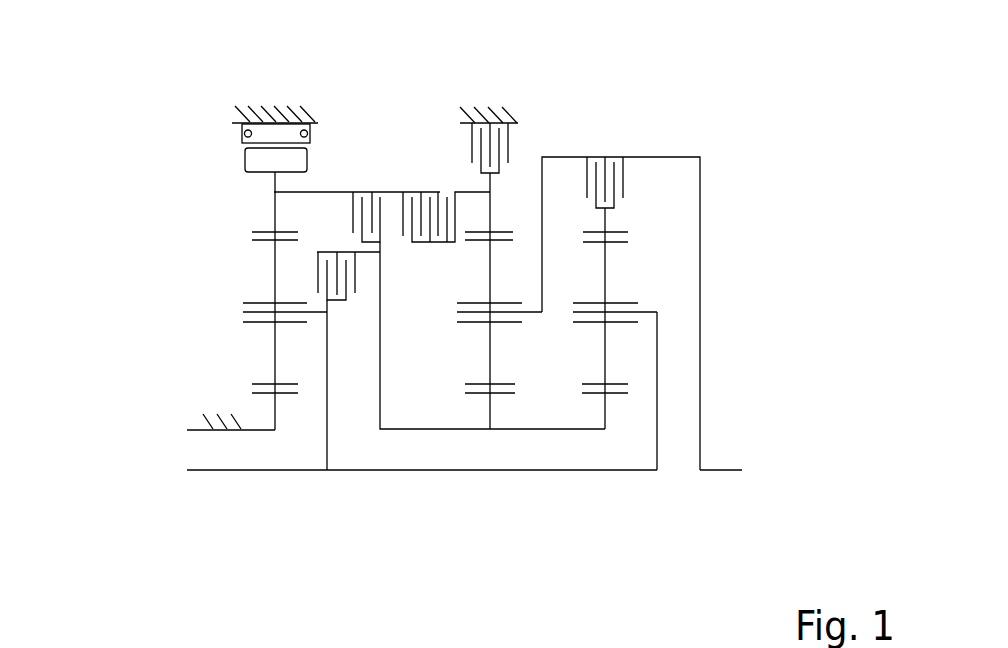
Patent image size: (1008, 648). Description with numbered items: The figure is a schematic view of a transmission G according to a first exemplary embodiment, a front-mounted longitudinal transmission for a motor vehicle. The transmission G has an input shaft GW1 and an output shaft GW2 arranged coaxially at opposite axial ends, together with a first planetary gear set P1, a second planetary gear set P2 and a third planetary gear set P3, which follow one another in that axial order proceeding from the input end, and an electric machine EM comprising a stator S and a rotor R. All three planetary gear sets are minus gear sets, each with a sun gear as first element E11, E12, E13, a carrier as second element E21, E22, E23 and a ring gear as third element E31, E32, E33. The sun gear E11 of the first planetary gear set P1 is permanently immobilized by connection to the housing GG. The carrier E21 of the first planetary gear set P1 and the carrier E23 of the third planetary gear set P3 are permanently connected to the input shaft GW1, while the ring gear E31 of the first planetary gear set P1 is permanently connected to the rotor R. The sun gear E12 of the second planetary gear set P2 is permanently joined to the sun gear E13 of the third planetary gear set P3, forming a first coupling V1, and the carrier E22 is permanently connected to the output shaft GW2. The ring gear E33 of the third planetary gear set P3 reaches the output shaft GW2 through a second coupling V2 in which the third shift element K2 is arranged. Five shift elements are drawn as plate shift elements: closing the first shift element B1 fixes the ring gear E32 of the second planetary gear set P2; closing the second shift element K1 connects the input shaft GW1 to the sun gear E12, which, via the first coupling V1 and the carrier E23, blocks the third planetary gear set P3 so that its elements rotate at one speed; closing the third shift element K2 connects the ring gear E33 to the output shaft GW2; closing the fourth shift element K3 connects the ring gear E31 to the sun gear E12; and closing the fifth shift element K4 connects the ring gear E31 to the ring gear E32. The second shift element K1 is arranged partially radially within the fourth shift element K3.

The electric machine EM is at (180, 144).
The stator S is at (232, 133).
The rotor R is at (232, 160).
The transmission G is at (740, 160).
The housing GG is at (212, 424).
The input shaft GW1 is at (232, 472).
The output shaft GW2 is at (722, 471).
The first coupling V1 is at (572, 433).
The second coupling V2 is at (608, 219).
The first planetary gear set P1 is at (274, 477).
The second planetary gear set P2 is at (488, 477).
The third planetary gear set P3 is at (605, 477).
The first element of the first planetary gear set E11 is at (293, 398).
The second element of the first planetary gear set E21 is at (318, 320).
The third element of the first planetary gear set E31 is at (267, 231).
The first element of the second planetary gear set E12 is at (473, 400).
The second element of the second planetary gear set E22 is at (534, 325).
The third element of the second planetary gear set E32 is at (508, 233).
The first element of the third planetary gear set E13 is at (623, 398).
The second element of the third planetary gear set E23 is at (656, 306).
The third element of the third planetary gear set E33 is at (627, 231).
The second shift element K1 is at (336, 248).
The third shift element K2 is at (614, 152).
The fourth shift element K3 is at (373, 189).
The fifth shift element K4 is at (421, 189).
The first shift element B1 is at (514, 148).